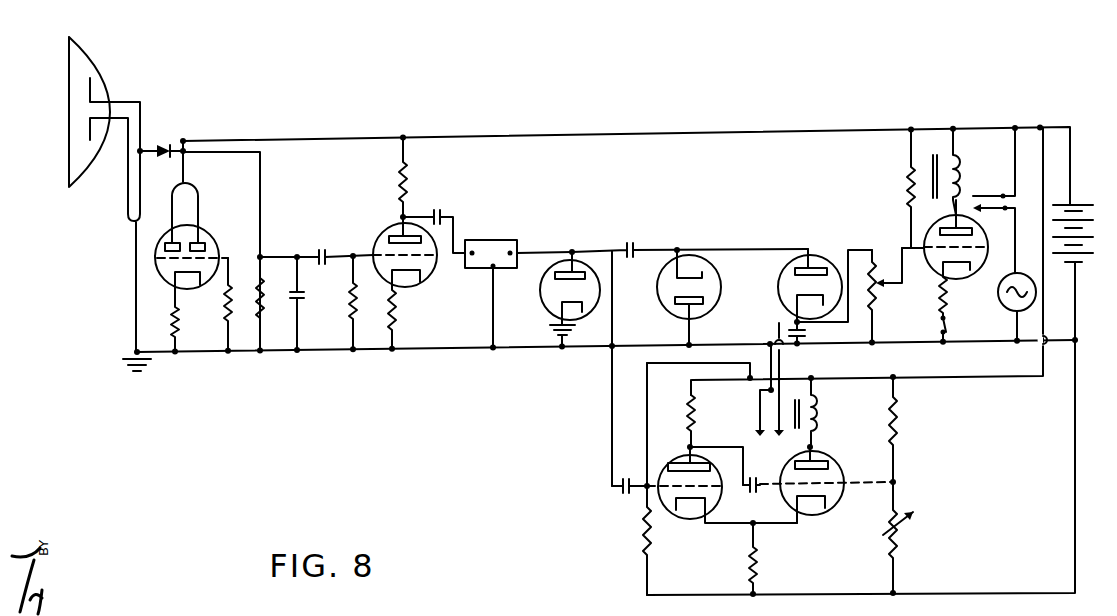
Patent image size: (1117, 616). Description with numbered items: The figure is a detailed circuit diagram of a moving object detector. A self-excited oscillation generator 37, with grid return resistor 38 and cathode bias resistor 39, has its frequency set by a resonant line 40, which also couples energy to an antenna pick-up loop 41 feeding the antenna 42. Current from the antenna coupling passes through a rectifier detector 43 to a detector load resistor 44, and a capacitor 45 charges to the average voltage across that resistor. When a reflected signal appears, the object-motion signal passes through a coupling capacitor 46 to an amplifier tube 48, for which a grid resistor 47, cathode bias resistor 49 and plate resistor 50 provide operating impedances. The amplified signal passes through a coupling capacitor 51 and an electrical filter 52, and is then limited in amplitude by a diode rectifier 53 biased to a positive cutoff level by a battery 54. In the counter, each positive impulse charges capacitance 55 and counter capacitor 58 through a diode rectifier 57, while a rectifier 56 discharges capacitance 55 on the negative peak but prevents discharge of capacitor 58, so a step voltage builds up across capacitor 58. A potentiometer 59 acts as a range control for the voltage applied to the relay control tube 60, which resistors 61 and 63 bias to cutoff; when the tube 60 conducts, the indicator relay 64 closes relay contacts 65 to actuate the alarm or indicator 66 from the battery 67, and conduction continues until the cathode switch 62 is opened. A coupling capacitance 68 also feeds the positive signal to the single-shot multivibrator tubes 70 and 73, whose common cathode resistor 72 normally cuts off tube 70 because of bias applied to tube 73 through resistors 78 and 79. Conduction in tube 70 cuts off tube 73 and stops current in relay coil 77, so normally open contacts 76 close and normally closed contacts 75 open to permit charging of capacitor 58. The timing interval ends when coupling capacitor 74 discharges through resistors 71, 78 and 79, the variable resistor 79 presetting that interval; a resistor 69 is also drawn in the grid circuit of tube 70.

The oscillation generator 37 is at (214, 254).
The grid return resistor 38 is at (223, 298).
The cathode bias resistor 39 is at (178, 333).
The resonant line 40 is at (198, 190).
The antenna pick-up loop 41 is at (128, 195).
The antenna 42 is at (102, 100).
The rectifier detector 43 is at (170, 149).
The detector load resistor 44 is at (263, 308).
The capacitor 45 is at (300, 304).
The coupling capacitor 46 is at (326, 260).
The grid resistor 47 is at (350, 302).
The amplifier tube 48 is at (426, 276).
The cathode bias resistor 49 is at (396, 318).
The plate resistor 50 is at (407, 193).
The coupling capacitor 51 is at (442, 220).
The electrical filter 52 is at (486, 240).
The diode rectifier 53 is at (541, 288).
The battery 54 is at (552, 328).
The capacitance 55 is at (633, 247).
The rectifier 56 is at (663, 302).
The diode rectifier 57 is at (778, 292).
The counter capacitor 58 is at (801, 337).
The potentiometer 59 is at (875, 294).
The relay control tube 60 is at (984, 250).
The resistor 61 is at (948, 297).
The cathode switch 62 is at (947, 326).
The resistor 63 is at (906, 186).
The indicator relay 64 is at (960, 180).
The relay contacts 65 is at (1003, 195).
The indicator 66 is at (1034, 297).
The battery 67 is at (1078, 256).
The coupling capacitance 68 is at (623, 493).
The grid resistor 69 is at (641, 530).
The tube 70 is at (676, 516).
The resistor 71 is at (694, 408).
The common cathode resistor 72 is at (757, 568).
The tube 73 is at (818, 514).
The coupling capacitor 74 is at (752, 490).
The relay contacts 75 is at (797, 432).
The relay contacts 76 is at (751, 405).
The relay coil 77 is at (818, 412).
The resistor 78 is at (898, 414).
The variable resistor 79 is at (899, 537).